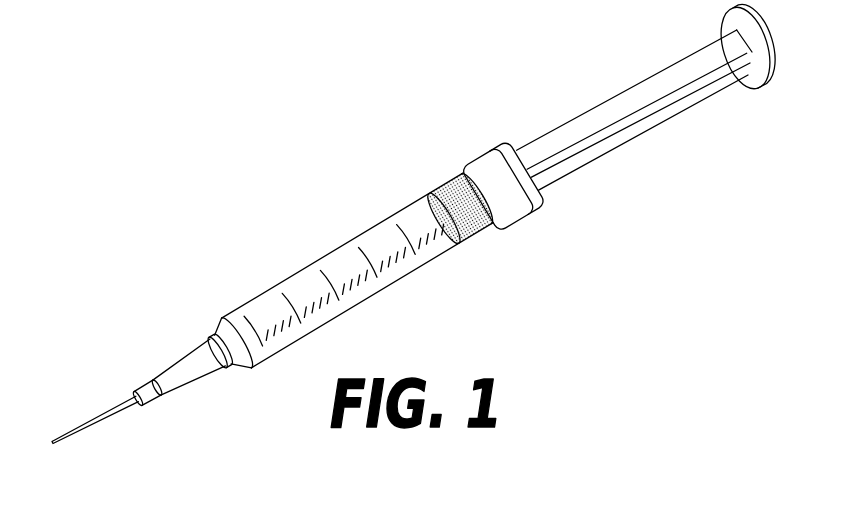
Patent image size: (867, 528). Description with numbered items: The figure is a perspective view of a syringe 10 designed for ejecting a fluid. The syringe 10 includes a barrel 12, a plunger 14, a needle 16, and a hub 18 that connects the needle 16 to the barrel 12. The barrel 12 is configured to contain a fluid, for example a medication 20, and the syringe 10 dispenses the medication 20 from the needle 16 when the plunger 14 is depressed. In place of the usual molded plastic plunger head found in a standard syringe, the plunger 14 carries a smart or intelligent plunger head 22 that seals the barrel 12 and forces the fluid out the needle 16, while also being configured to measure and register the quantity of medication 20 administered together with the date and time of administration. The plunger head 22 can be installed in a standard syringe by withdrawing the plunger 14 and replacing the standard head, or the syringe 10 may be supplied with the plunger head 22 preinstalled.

The syringe 10 is at (136, 113).
The barrel 12 is at (340, 246).
The plunger 14 is at (583, 113).
The needle 16 is at (97, 415).
The hub 18 is at (185, 350).
The medication 20 is at (268, 305).
The smart plunger head 22 is at (443, 192).